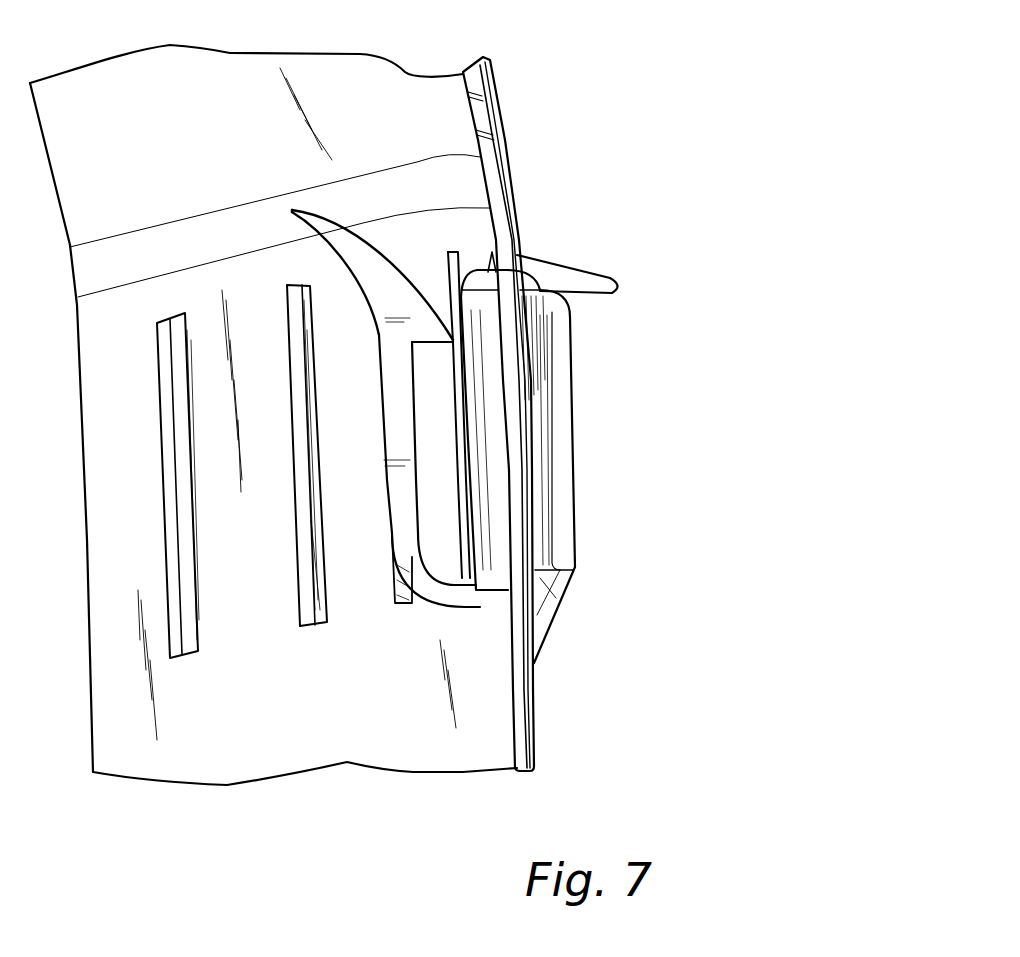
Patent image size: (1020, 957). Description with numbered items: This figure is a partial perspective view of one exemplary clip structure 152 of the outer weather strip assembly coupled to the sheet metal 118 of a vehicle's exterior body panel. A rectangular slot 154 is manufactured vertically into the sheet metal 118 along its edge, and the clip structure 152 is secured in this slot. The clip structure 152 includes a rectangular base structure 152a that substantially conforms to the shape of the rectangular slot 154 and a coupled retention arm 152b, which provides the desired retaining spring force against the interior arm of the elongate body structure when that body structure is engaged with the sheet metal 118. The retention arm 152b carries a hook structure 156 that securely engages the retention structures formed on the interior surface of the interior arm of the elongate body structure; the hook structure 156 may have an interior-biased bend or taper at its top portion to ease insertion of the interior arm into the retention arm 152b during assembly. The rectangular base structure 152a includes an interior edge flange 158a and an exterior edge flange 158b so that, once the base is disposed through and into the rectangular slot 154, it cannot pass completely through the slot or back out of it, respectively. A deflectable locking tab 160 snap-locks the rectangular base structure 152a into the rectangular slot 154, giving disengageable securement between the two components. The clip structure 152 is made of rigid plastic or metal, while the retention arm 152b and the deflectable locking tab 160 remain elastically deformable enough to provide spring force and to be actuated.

The sheet metal 118 is at (392, 692).
The clip structure 152 is at (540, 228).
The rectangular base structure 152a is at (576, 476).
The retention arm 152b is at (363, 223).
The rectangular slot 154 is at (300, 598).
The hook structure 156 is at (390, 250).
The interior edge flange 158a is at (500, 557).
The exterior edge flange 158b is at (553, 630).
The deflectable locking tab 160 is at (587, 270).